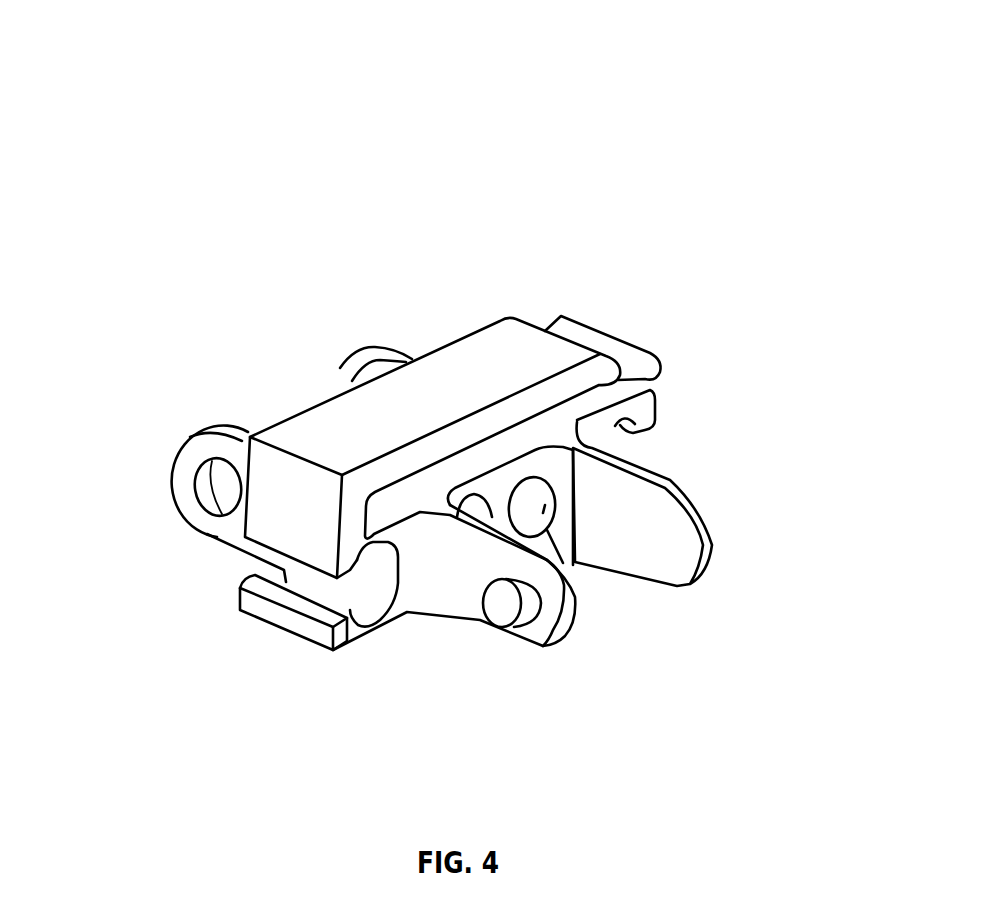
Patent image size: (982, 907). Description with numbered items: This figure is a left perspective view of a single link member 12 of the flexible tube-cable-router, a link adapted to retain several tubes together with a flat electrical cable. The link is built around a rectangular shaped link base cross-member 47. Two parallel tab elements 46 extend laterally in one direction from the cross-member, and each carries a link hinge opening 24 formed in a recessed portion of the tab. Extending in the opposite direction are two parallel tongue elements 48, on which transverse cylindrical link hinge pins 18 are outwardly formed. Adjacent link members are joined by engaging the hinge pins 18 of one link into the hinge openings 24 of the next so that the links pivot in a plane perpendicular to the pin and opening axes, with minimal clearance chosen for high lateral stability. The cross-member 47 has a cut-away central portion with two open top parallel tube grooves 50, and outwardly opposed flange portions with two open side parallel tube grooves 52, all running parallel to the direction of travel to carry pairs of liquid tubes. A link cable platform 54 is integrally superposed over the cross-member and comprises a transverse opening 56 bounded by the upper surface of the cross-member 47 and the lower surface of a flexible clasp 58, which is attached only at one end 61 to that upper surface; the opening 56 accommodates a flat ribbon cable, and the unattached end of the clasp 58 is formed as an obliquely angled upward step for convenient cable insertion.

The link member 12 is at (670, 203).
The link hinge pin 18 is at (505, 613).
The link hinge opening 24 is at (227, 488).
The tab element 46 is at (183, 427).
The link base cross-member 47 is at (423, 613).
The tongue element 48 is at (556, 652).
The tube groove 50 is at (575, 561).
The tube groove 52 is at (627, 450).
The link cable platform 54 is at (508, 302).
The transverse opening 56 is at (427, 487).
The flexible clasp 58 is at (463, 357).
The attached end of flexible clasp 61 is at (285, 517).